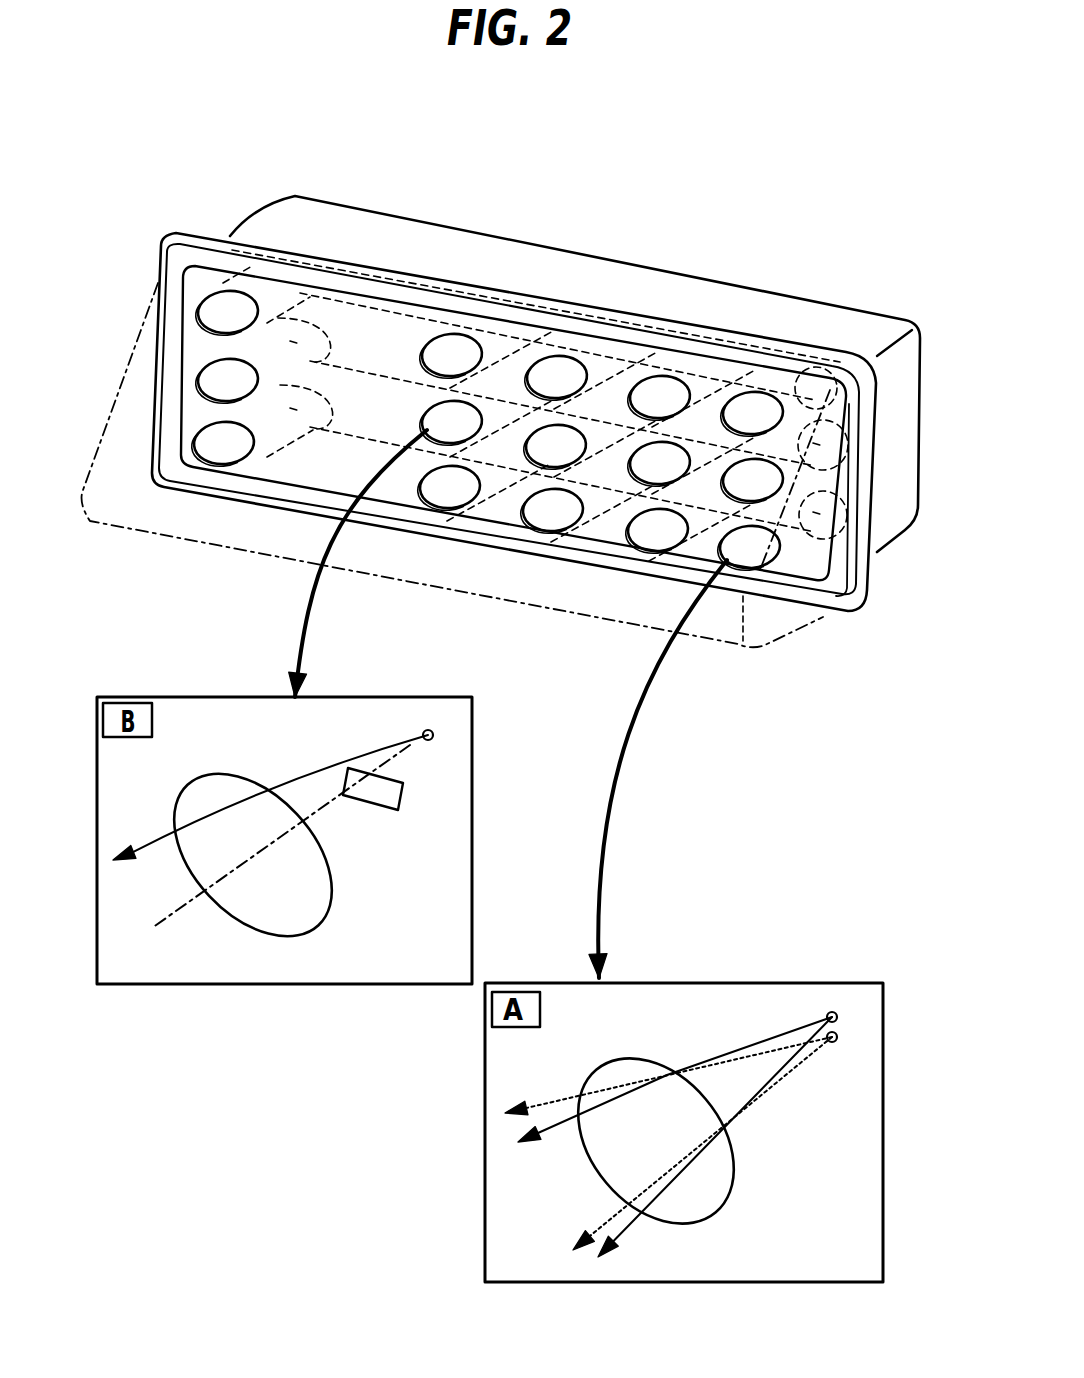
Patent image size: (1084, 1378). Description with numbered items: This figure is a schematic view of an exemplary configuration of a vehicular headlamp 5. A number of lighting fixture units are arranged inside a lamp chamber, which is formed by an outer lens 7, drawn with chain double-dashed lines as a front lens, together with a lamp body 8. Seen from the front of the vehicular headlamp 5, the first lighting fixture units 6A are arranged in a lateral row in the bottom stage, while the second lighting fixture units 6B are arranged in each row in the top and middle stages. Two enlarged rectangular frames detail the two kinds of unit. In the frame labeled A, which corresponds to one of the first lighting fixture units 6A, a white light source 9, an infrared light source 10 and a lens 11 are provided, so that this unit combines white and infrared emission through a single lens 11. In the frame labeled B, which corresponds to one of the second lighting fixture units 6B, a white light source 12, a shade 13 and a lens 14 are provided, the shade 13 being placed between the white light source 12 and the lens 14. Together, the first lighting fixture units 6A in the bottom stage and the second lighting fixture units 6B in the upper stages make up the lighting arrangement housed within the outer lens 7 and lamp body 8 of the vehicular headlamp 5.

The vehicular headlamp 5 is at (722, 242).
The first lighting fixture unit 6A is at (219, 466).
The second lighting fixture unit 6B is at (237, 303).
The outer lens 7 is at (130, 353).
The lamp body 8 is at (450, 250).
The white light source 9 is at (838, 1016).
The infrared light source 10 is at (837, 1040).
The lens 11 is at (713, 1190).
The white light source 12 is at (435, 737).
The shade 13 is at (397, 806).
The lens 14 is at (307, 920).